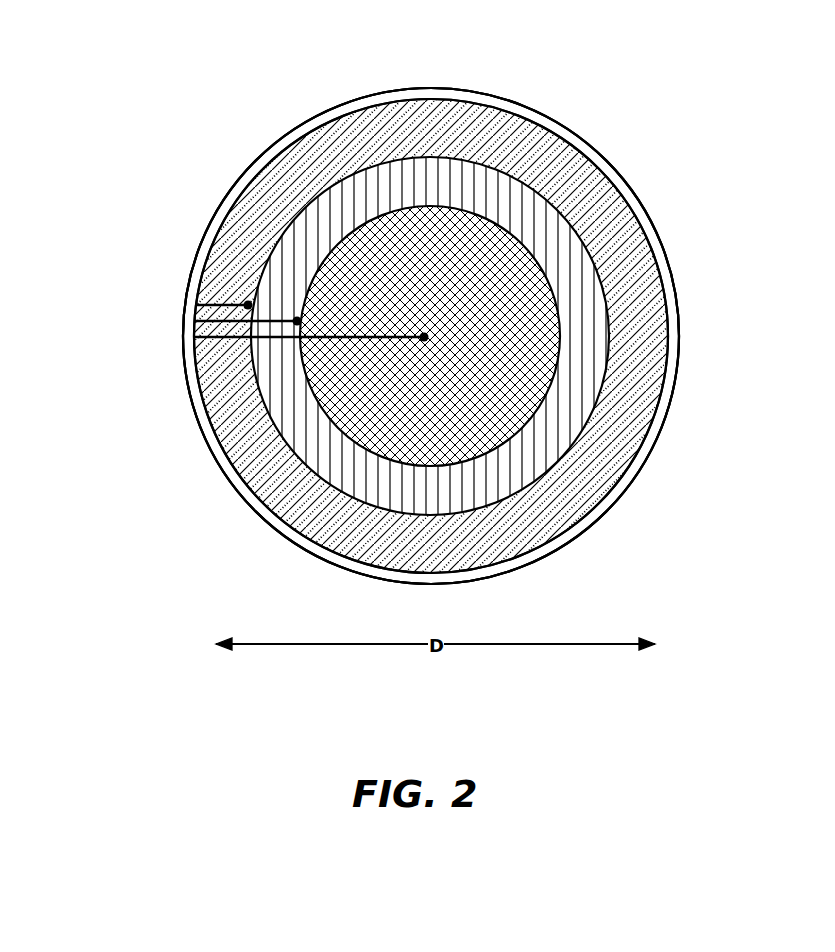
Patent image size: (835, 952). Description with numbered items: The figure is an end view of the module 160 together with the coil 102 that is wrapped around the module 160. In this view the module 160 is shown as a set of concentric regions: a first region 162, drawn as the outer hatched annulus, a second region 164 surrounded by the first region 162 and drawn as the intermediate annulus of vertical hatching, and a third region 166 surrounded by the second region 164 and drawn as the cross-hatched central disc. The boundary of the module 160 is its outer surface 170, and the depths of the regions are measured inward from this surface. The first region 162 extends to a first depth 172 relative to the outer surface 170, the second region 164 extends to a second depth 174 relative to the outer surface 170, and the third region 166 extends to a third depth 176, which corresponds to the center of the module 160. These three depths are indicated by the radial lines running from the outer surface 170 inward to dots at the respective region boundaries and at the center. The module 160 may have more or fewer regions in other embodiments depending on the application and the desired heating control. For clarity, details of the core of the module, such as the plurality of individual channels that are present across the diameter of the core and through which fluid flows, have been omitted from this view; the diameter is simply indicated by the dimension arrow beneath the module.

The module 160 is at (120, 85).
The coil 102 is at (673, 283).
The first region 162 is at (627, 228).
The second region 164 is at (557, 232).
The third region 166 is at (490, 234).
The outer surface 170 is at (655, 240).
The first depth 172 is at (196, 304).
The second depth 174 is at (197, 320).
The third depth 176 is at (195, 338).